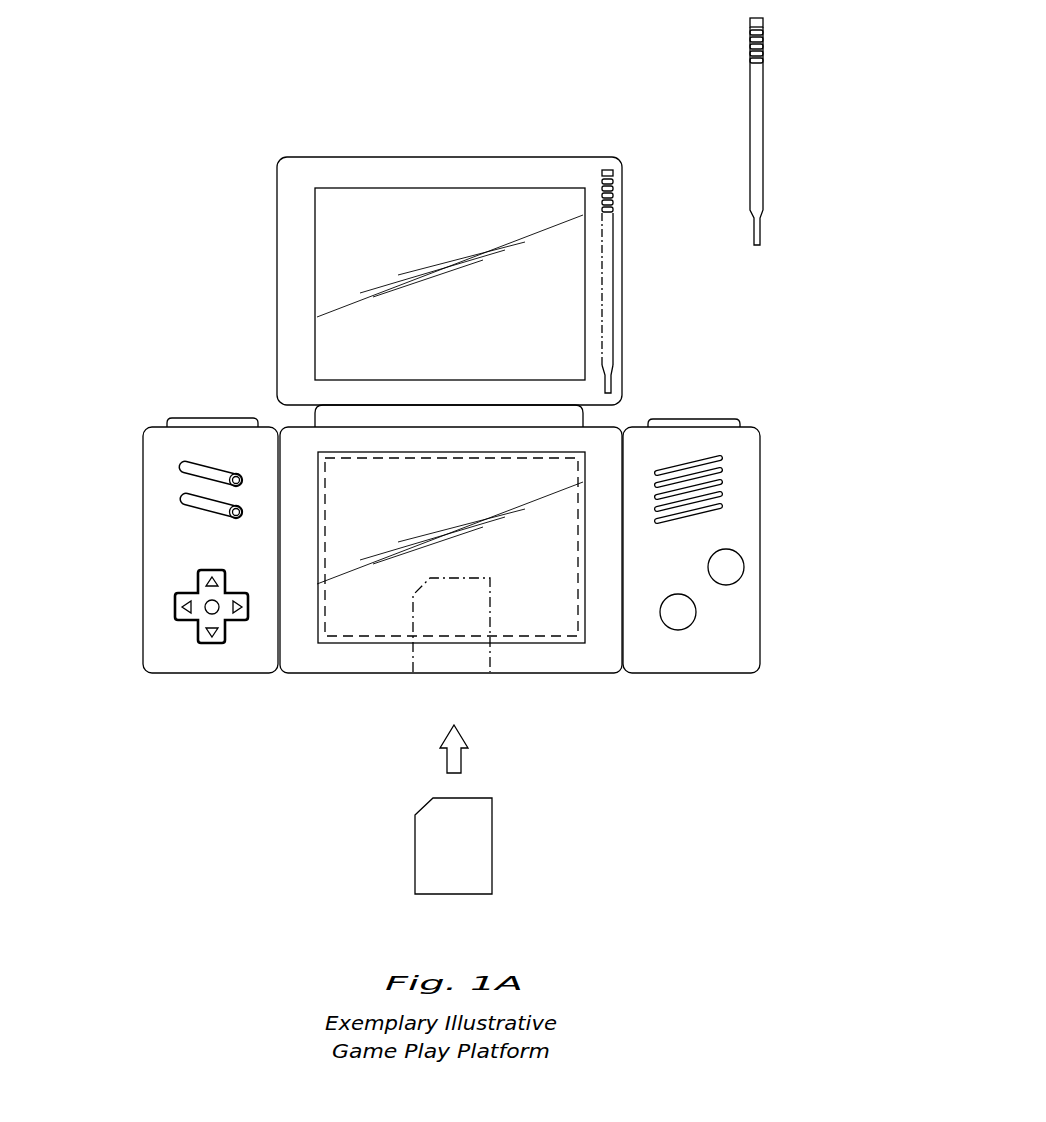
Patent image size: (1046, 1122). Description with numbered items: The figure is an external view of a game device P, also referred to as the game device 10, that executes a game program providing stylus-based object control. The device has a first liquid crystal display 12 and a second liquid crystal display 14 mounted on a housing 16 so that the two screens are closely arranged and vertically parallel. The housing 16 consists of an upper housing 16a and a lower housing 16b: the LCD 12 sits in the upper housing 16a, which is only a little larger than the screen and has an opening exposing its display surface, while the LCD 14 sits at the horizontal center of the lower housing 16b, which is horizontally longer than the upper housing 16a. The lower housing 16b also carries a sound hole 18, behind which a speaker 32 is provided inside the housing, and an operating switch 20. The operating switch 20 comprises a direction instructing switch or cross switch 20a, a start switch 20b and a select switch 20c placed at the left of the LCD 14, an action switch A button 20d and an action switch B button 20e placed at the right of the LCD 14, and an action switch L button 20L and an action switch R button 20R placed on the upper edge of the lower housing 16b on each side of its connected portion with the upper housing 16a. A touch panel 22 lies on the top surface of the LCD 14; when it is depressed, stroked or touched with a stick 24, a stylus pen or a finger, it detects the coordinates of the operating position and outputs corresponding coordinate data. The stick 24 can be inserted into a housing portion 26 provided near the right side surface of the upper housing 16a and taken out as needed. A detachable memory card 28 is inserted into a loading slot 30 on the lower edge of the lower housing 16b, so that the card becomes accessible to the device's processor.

The game device P is at (250, 147).
The game device 10 is at (365, 38).
The first liquid crystal display 12 is at (337, 248).
The second liquid crystal display 14 is at (560, 643).
The housing 16 is at (725, 308).
The upper housing 16a is at (622, 332).
The lower housing 16b is at (608, 425).
The sound hole 18 is at (722, 482).
The speaker 32 is at (688, 489).
The operating switch 20 is at (165, 446).
The action switch (L button) 20L is at (213, 415).
The action switch (R button) 20R is at (708, 418).
The direction instructing switch (cross switch) 20a is at (174, 604).
The start switch 20b is at (232, 478).
The select switch 20c is at (232, 510).
The action switch (A button) 20d is at (744, 563).
The action switch (B button) 20e is at (697, 613).
The touch panel 22 is at (343, 606).
The stick 24 is at (763, 123).
The housing portion (housing slot) 26 is at (607, 232).
The memory card 28 is at (487, 837).
The loading slot 30 is at (453, 675).